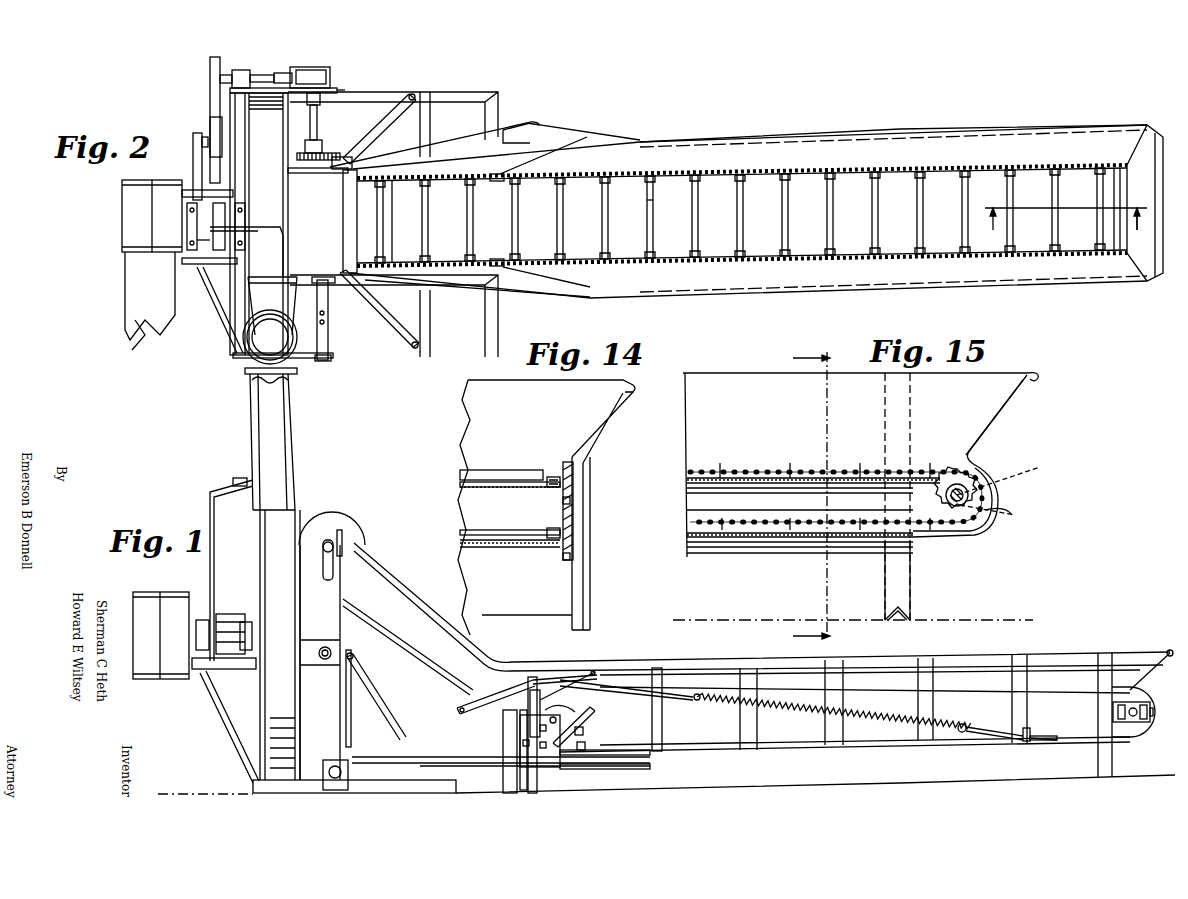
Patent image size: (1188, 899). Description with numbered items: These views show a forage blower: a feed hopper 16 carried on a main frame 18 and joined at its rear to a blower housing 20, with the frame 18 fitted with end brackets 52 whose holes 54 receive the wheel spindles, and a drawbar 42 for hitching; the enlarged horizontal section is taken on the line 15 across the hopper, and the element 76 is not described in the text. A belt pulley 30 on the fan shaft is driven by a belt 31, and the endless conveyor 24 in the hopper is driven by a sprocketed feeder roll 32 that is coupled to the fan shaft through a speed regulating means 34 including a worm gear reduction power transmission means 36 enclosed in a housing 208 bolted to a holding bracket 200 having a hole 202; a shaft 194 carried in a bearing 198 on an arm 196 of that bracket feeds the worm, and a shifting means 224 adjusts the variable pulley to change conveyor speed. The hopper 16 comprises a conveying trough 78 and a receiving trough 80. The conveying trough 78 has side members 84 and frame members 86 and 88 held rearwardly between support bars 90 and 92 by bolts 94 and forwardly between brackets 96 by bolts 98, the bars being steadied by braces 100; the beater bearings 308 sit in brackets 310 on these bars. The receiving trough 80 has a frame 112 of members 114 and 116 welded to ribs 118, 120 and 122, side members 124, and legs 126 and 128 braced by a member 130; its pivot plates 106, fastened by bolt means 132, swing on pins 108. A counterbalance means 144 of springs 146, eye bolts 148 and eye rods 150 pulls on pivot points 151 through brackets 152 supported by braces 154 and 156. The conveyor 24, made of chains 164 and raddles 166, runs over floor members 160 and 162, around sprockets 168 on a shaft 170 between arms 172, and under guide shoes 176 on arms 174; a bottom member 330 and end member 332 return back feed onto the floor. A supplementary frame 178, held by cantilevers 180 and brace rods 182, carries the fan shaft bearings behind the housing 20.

In FIG. 2, the section line 15— 15 is at (1135, 227).
In FIG. 2, the feed hopper 16 is at (595, 100).
In FIG. 15, the feed hopper 16 is at (620, 625).
In FIG. 1, the feed hopper 16 is at (638, 588).
In FIG. 2, the main frame 18 is at (378, 360).
In FIG. 2, the blower housing 20 is at (245, 292).
In FIG. 1, the blower housing 20 is at (292, 520).
In FIG. 2, the endless conveyor 24 is at (760, 130).
In FIG. 14, the endless conveyor 24 is at (480, 455).
In FIG. 15, the endless conveyor 24 is at (732, 435).
In FIG. 2, the belt pulley 30 is at (122, 235).
In FIG. 1, the belt pulley 30 is at (146, 680).
In FIG. 2, the belt 31 is at (142, 345).
In FIG. 1, the sprocketed feeder roll 32 is at (332, 646).
In FIG. 2, the speed regulating means 34 is at (200, 120).
In FIG. 2, the worm gear reduction power transmission means 36 is at (345, 58).
In FIG. 1, the drawbar 42 is at (585, 768).
In FIG. 2, the end brackets 52 is at (318, 360).
In FIG. 1, the holes 54 is at (333, 790).
In FIG. 1, the elevator tower 76 is at (250, 390).
In FIG. 2, the conveying trough 78 is at (530, 110).
In FIG. 1, the conveying trough 78 is at (763, 609).
In FIG. 2, the receiving trough 80 is at (845, 120).
In FIG. 1, the receiving trough 80 is at (1078, 635).
In FIG. 2, the side members 84 is at (455, 150).
In FIG. 1, the frame members 86 is at (522, 725).
In FIG. 1, the frame members 88 is at (505, 725).
In FIG. 2, the support bar 90 is at (328, 277).
In FIG. 1, the support bar 90 is at (408, 643).
In FIG. 2, the support bar 92 is at (318, 162).
In FIG. 1, the bolts 94 is at (350, 745).
In FIG. 1, the brackets 96 is at (535, 745).
In FIG. 1, the bolts 98 is at (548, 770).
In FIG. 2, the braces 100 is at (380, 88).
In FIG. 1, the braces 100 is at (378, 700).
In FIG. 1, the pivot plates 106 is at (585, 730).
In FIG. 1, the pins 108 is at (578, 710).
In FIG. 14, the frame 112 is at (560, 515).
In FIG. 14, the frame members 114 is at (546, 487).
In FIG. 15, the frame members 114 is at (687, 498).
In FIG. 14, the frame members 116 is at (560, 555).
In FIG. 15, the frame members 116 is at (692, 553).
In FIG. 1, the rib 118 is at (660, 752).
In FIG. 1, the rib 120 is at (1028, 742).
In FIG. 15, the rib 122 is at (960, 509).
In FIG. 1, the rib 122 is at (1102, 708).
In FIG. 2, the side members 124 is at (895, 130).
In FIG. 14, the side members 124 is at (585, 470).
In FIG. 15, the side members 124 is at (897, 456).
In FIG. 1, the side members 124 is at (878, 733).
In FIG. 14, the leg 126 is at (592, 519).
In FIG. 1, the leg 126 is at (1102, 758).
In FIG. 15, the leg 128 is at (912, 583).
In FIG. 14, the brace member 130 is at (532, 614).
In FIG. 15, the brace member 130 is at (912, 605).
In FIG. 1, the bolt means 132 is at (586, 745).
In FIG. 15, the counterbalance means 144 is at (798, 498).
In FIG. 1, the counterbalance means 144 is at (890, 700).
In FIG. 1, the springs 146 is at (960, 724).
In FIG. 1, the eye bolts 148 is at (1033, 730).
In FIG. 1, the eye rods 150 is at (610, 685).
In FIG. 1, the pivot points 151 is at (535, 690).
In FIG. 1, the brackets 152 is at (545, 685).
In FIG. 1, the brace support 154 is at (590, 672).
In FIG. 1, the brace support 156 is at (503, 700).
In FIG. 2, the floor member 160 is at (747, 215).
In FIG. 14, the floor member 160 is at (488, 490).
In FIG. 15, the floor member 160 is at (687, 478).
In FIG. 2, the floor member 162 is at (406, 221).
In FIG. 2, the chains 164 is at (655, 175).
In FIG. 15, the chains 164 is at (782, 470).
In FIG. 2, the raddles 166 is at (650, 228).
In FIG. 14, the raddles 166 is at (510, 470).
In FIG. 15, the raddles 166 is at (860, 468).
In FIG. 15, the sprockets 168 is at (970, 475).
In FIG. 15, the shaft 170 is at (968, 493).
In FIG. 1, the shaft 170 is at (1130, 717).
In FIG. 15, the arms 172 is at (1011, 487).
In FIG. 1, the arms 172 is at (1147, 710).
In FIG. 1, the arms 174 is at (530, 730).
In FIG. 2, the guide shoes 176 is at (500, 174).
In FIG. 2, the supplementary frame 178 is at (215, 268).
In FIG. 1, the supplementary frame 178 is at (230, 673).
In FIG. 1, the cantilevers 180 is at (230, 718).
In FIG. 2, the brace rods 182 is at (245, 270).
In FIG. 2, the shaft 194 is at (262, 75).
In FIG. 2, the arm 196 is at (212, 60).
In FIG. 2, the bearing 198 is at (240, 70).
In FIG. 2, the holding bracket 200 is at (305, 100).
In FIG. 2, the hole 202 is at (330, 95).
In FIG. 2, the housing 208 is at (308, 69).
In FIG. 2, the shifting means 224 is at (272, 210).
In FIG. 1, the bearings 308 is at (332, 540).
In FIG. 1, the brackets 310 is at (342, 535).
In FIG. 14, the bottom member 330 is at (470, 548).
In FIG. 15, the bottom member 330 is at (687, 536).
In FIG. 15, the end member 332 is at (1000, 512).